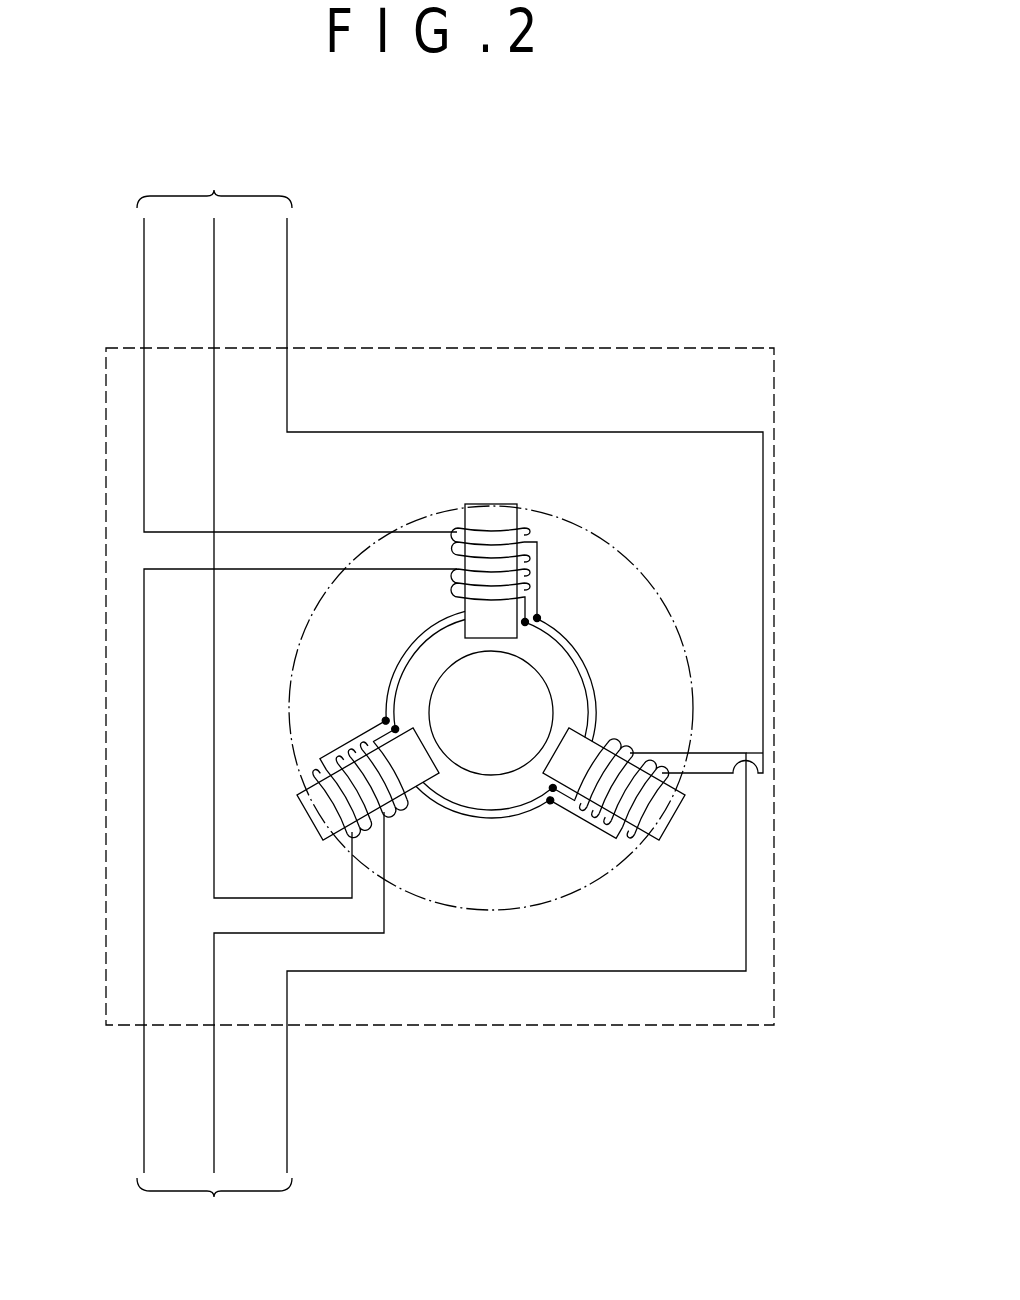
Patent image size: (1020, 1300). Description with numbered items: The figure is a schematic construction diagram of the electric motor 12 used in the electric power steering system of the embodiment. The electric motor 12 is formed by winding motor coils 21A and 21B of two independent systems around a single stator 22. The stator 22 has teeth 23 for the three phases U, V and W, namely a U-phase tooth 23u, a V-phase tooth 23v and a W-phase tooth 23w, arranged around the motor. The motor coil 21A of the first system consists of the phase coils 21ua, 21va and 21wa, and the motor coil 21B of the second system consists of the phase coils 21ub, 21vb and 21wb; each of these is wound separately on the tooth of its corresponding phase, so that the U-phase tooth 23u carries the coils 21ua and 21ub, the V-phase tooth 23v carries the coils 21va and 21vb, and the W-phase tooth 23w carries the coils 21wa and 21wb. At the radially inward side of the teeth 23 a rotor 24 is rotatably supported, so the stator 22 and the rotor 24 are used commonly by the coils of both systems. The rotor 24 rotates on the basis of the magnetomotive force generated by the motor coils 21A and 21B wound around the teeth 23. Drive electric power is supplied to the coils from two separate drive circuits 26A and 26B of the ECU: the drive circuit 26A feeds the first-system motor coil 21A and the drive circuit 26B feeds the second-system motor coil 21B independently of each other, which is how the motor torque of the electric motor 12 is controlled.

The electric motor 12 is at (655, 348).
The stator 22 is at (605, 537).
The teeth 23 is at (486, 684).
The U-phase tooth 23u is at (492, 515).
The V-phase tooth 23v is at (320, 816).
The W-phase tooth 23w is at (662, 810).
The rotor 24 is at (476, 720).
The motor coil 21A is at (465, 722).
The motor coil 21B is at (493, 710).
The U-phase motor coil of the first system 21ua is at (530, 549).
The U-phase motor coil of the second system 21ub is at (453, 581).
The V-phase motor coil of the first system 21va is at (325, 758).
The V-phase motor coil of the second system 21vb is at (408, 808).
The W-phase motor coil of the first system 21wa is at (627, 830).
The W-phase motor coil of the second system 21wb is at (601, 738).
The drive circuit 26A is at (216, 184).
The drive circuit 26B is at (217, 1204).